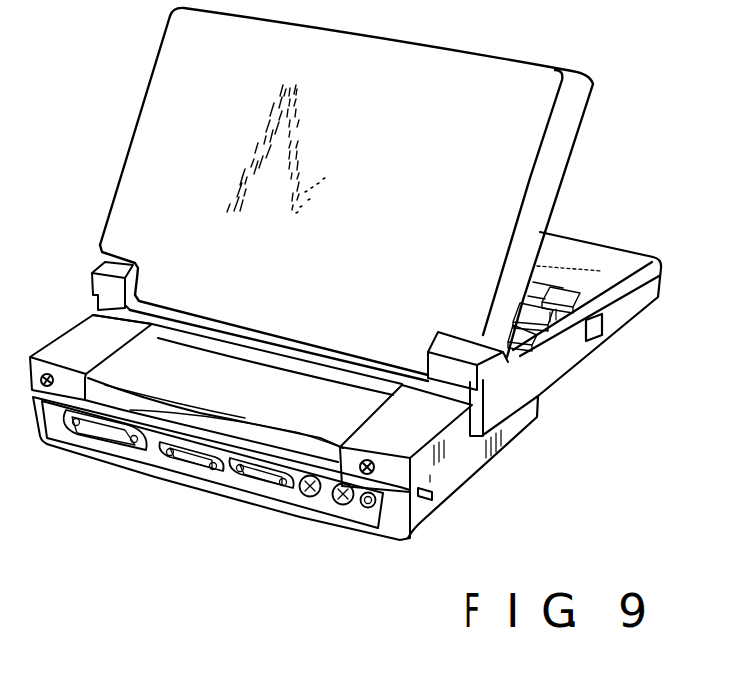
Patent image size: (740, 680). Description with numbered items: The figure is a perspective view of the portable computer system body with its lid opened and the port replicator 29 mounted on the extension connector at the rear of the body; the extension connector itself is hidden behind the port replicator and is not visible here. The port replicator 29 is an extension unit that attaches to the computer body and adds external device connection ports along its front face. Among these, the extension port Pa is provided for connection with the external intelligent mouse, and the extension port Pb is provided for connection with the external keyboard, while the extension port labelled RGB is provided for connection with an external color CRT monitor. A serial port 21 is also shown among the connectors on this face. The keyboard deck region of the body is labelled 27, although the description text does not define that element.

The serial port 21 is at (182, 458).
The RGB extension port RGB is at (257, 481).
The extension port Pb is at (310, 497).
The extension port Pa is at (343, 505).
The keyboard 27 is at (590, 258).
The port replicator 29 is at (462, 475).